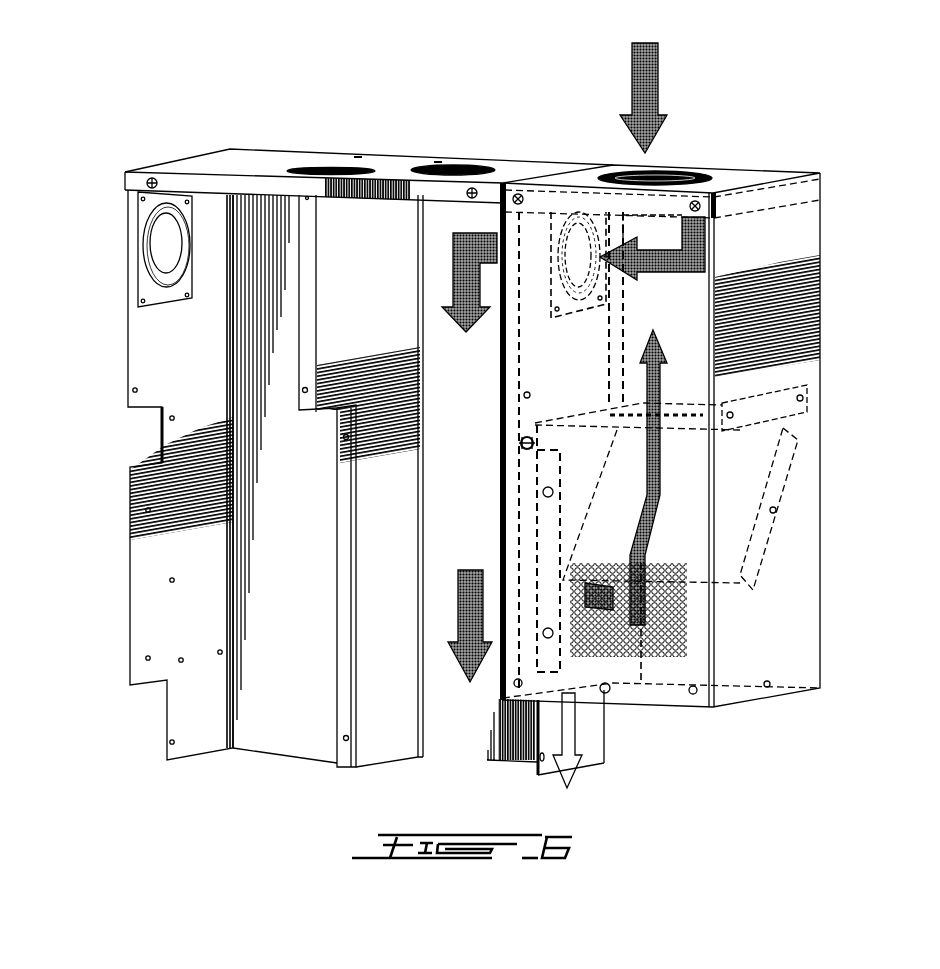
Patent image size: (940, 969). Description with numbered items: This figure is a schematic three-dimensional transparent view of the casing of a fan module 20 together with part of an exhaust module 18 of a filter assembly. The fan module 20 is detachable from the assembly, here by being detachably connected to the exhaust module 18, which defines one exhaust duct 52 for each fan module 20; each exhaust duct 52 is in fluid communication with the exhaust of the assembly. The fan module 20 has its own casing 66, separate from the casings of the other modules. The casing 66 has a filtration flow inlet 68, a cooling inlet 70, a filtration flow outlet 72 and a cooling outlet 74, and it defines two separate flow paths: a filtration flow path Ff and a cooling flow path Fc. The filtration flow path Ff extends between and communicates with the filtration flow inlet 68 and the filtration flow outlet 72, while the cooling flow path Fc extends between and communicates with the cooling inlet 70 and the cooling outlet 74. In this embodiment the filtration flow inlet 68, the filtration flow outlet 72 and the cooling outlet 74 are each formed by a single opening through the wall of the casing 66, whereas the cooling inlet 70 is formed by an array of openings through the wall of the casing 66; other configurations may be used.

The exhaust module 18 is at (303, 150).
The fan module 20 is at (834, 233).
The exhaust duct 52 is at (433, 253).
The casing 66 is at (780, 328).
The filtration flow inlet 68 is at (683, 177).
The cooling inlet 70 is at (667, 657).
The filtration flow outlet 72 is at (582, 212).
The cooling outlet 74 is at (548, 768).
The filtration flow path Ff is at (647, 70).
The cooling flow path Fc is at (660, 473).